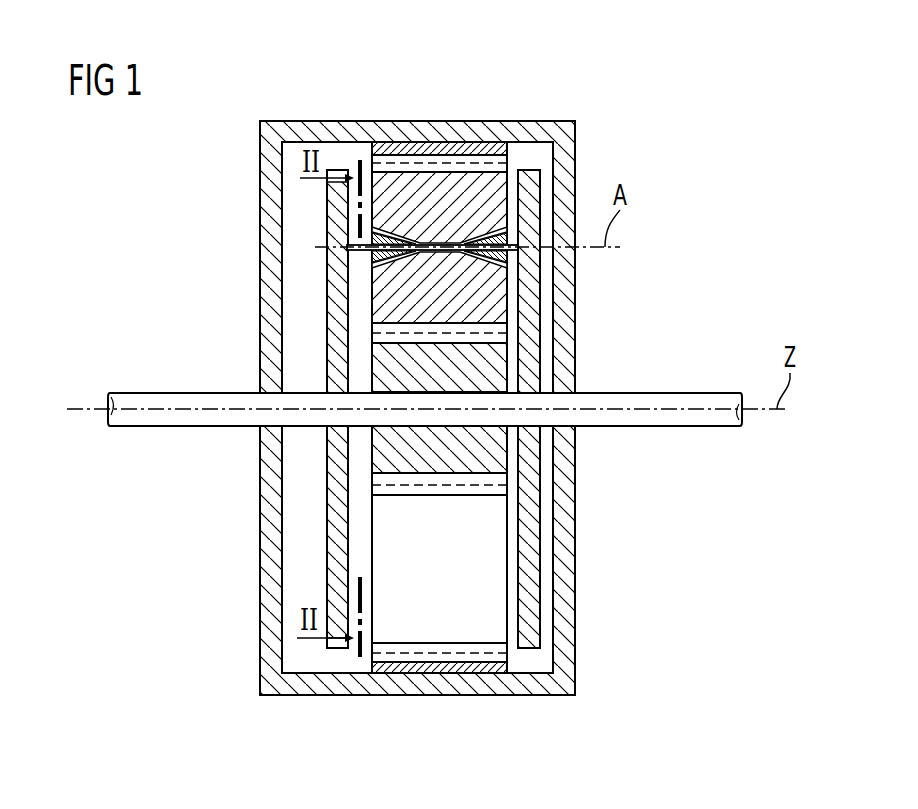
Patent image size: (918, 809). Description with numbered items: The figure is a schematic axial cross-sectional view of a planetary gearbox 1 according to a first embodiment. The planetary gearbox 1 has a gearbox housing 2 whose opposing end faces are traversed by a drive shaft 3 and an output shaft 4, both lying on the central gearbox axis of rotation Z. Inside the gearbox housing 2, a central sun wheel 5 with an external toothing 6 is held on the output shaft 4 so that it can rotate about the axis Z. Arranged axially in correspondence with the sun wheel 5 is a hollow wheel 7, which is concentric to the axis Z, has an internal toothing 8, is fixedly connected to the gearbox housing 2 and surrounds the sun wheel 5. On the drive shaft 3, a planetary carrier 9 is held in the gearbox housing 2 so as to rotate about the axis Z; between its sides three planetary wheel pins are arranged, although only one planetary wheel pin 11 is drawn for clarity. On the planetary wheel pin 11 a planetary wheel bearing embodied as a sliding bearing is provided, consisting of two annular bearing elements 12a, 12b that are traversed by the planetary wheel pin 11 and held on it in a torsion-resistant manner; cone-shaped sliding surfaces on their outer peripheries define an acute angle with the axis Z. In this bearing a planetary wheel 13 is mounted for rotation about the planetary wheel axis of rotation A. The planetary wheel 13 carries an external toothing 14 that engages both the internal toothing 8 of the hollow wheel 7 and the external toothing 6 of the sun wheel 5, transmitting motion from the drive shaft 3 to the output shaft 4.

The planetary gearbox 1 is at (655, 139).
The gearbox housing 2 is at (565, 152).
The drive shaft 3 is at (177, 392).
The output shaft 4 is at (680, 393).
The sun wheel 5 is at (492, 450).
The external toothing 6 is at (492, 480).
The hollow wheel 7 is at (405, 153).
The internal toothing 8 is at (417, 163).
The planetary carrier 9 is at (337, 322).
The planetary wheel pin 11 is at (352, 240).
The annular bearing element 12a is at (335, 255).
The annular bearing element 12b is at (518, 257).
The planetary wheel 13 is at (480, 190).
The external toothing 14 is at (448, 170).